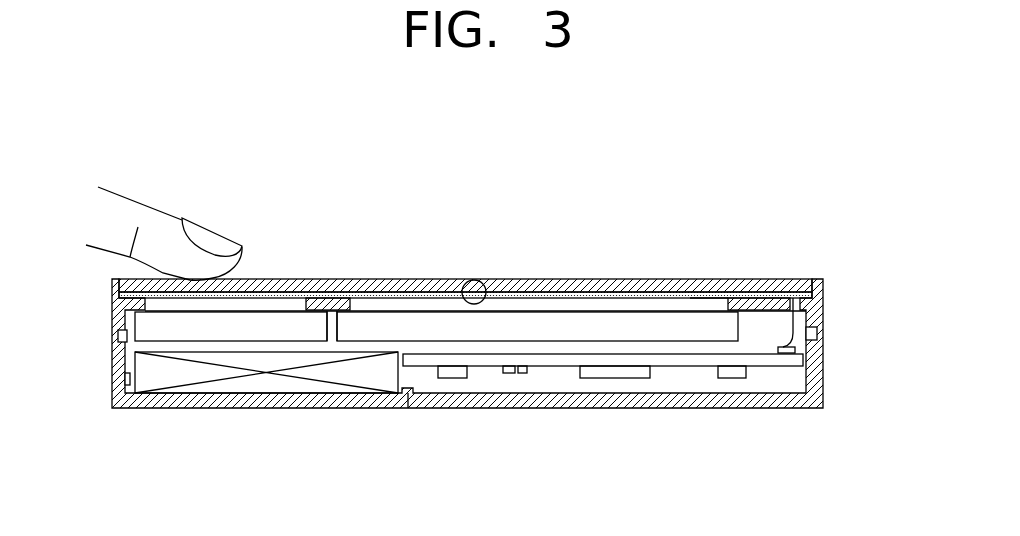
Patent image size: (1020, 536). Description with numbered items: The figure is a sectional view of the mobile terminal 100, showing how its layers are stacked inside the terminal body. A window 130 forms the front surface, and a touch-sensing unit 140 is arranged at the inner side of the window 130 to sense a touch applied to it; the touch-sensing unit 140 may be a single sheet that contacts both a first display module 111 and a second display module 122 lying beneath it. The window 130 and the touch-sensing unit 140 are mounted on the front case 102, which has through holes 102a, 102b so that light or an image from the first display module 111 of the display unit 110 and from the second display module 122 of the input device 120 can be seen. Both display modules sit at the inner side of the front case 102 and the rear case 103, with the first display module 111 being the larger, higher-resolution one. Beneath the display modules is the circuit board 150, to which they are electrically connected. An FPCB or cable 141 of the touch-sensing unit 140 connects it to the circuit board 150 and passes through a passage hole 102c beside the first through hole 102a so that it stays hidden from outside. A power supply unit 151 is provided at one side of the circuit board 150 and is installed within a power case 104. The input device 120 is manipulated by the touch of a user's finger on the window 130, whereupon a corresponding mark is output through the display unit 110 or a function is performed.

The mobile terminal 100 is at (587, 222).
The front case 102 is at (118, 303).
The first through hole 102a is at (716, 296).
The through hole 102b is at (307, 297).
The passage hole 102c is at (794, 297).
The rear case 103 is at (818, 373).
The power case 104 is at (120, 408).
The display unit 110 is at (643, 274).
The first display module 111 is at (483, 325).
The input device 120 is at (259, 272).
The second display module 122 is at (189, 325).
The window 130 is at (415, 280).
The touch-sensing unit 140 is at (485, 281).
The FPCB or cable 141 is at (794, 325).
The circuit board 150 is at (553, 360).
The power supply unit 151 is at (278, 378).